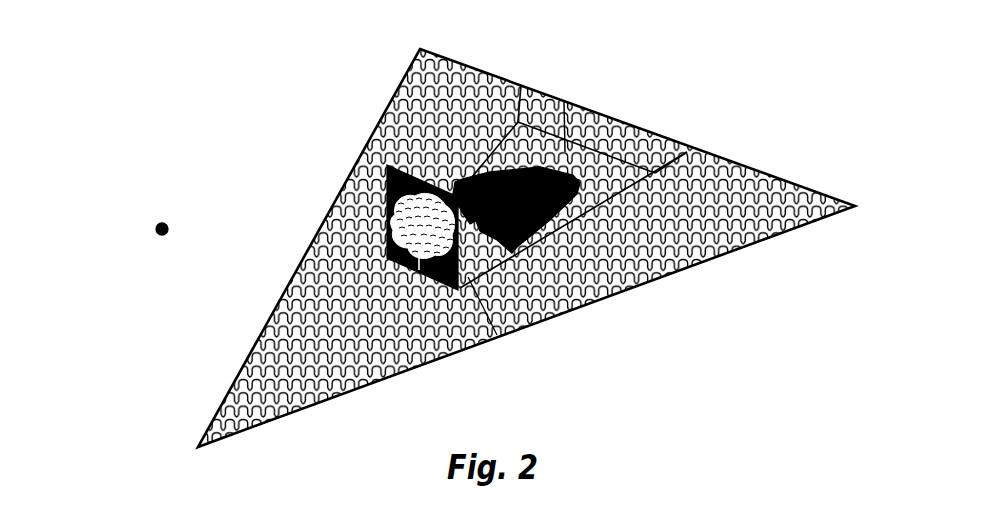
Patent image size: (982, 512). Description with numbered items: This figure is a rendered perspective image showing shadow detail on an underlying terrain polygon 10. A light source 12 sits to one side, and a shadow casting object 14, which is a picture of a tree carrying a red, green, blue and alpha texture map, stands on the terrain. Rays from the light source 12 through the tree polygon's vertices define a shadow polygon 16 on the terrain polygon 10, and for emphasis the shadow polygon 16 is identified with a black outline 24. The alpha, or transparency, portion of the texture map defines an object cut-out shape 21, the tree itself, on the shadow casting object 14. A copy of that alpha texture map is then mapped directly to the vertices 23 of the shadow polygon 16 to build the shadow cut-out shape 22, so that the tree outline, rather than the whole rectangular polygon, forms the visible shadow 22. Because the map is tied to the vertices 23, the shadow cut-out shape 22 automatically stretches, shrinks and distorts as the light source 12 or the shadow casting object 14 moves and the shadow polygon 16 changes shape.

The underlying terrain polygon 10 is at (398, 371).
The light source 12 is at (162, 223).
The shadow casting object 14 is at (497, 335).
The shadow polygon 16 is at (609, 146).
The object cut-out shape 21 is at (392, 204).
The shadow cut-out shape 22 is at (564, 104).
The vertices of the shadow polygon 23 is at (521, 85).
The black outline 24 is at (606, 206).